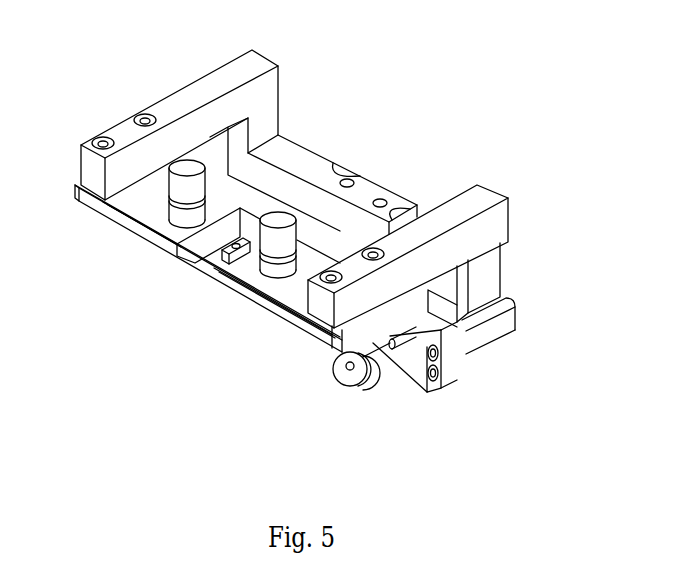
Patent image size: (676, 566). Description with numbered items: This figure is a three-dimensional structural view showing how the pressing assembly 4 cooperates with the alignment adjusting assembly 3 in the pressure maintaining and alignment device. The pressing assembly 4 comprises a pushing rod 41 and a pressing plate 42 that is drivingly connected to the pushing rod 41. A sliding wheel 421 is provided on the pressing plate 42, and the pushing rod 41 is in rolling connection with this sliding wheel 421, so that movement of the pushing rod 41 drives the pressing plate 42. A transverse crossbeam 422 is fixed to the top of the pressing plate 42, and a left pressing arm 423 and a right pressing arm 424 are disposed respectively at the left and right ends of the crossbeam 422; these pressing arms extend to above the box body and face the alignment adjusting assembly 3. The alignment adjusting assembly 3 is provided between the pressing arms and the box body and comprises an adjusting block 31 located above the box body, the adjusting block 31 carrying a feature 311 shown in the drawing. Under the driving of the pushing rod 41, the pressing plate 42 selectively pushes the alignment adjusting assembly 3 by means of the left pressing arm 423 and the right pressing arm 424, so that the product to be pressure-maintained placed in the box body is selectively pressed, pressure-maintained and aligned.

The alignment adjusting assembly 3 is at (102, 245).
The adjusting block 31 is at (278, 313).
The recess 311 is at (207, 268).
The pressing assembly 4 is at (458, 81).
The pushing rod 41 is at (457, 370).
The pressing plate 42 is at (420, 385).
The sliding wheel 421 is at (347, 388).
The crossbeam 422 is at (498, 282).
The left pressing arm 423 is at (222, 78).
The right pressing arm 424 is at (470, 200).